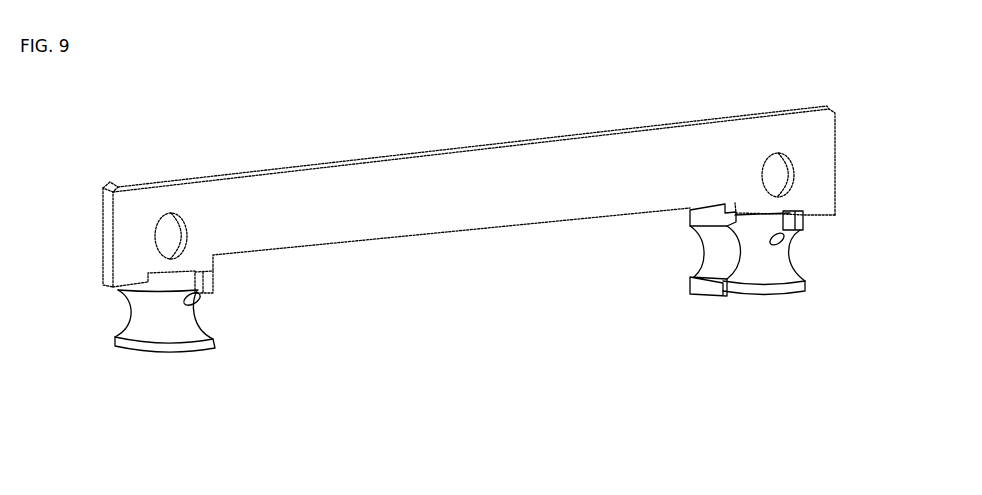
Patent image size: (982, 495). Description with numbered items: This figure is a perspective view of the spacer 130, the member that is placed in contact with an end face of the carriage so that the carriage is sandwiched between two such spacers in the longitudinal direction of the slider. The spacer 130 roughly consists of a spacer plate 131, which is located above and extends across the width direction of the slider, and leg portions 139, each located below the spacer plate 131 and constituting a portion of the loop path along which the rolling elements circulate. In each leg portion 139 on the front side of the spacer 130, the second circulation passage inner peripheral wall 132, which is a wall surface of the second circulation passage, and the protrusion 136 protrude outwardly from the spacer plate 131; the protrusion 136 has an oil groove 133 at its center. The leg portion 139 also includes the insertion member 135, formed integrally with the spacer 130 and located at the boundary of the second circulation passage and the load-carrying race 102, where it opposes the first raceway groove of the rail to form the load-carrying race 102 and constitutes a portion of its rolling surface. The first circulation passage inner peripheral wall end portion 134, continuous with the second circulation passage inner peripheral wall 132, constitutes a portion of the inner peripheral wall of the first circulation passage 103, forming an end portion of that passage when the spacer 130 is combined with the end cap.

The spacer 130 is at (493, 117).
The spacer plate 131 is at (647, 140).
The second circulation passage inner peripheral wall 132 is at (183, 323).
The oil groove 133 is at (805, 223).
The first circulation passage inner peripheral wall end portion 134 is at (122, 332).
The insertion member 135 is at (703, 287).
The protrusion 136 is at (215, 282).
The leg portion 139 is at (289, 265).
The load-carrying race 102 is at (723, 253).
The first circulation passage 103 is at (145, 317).